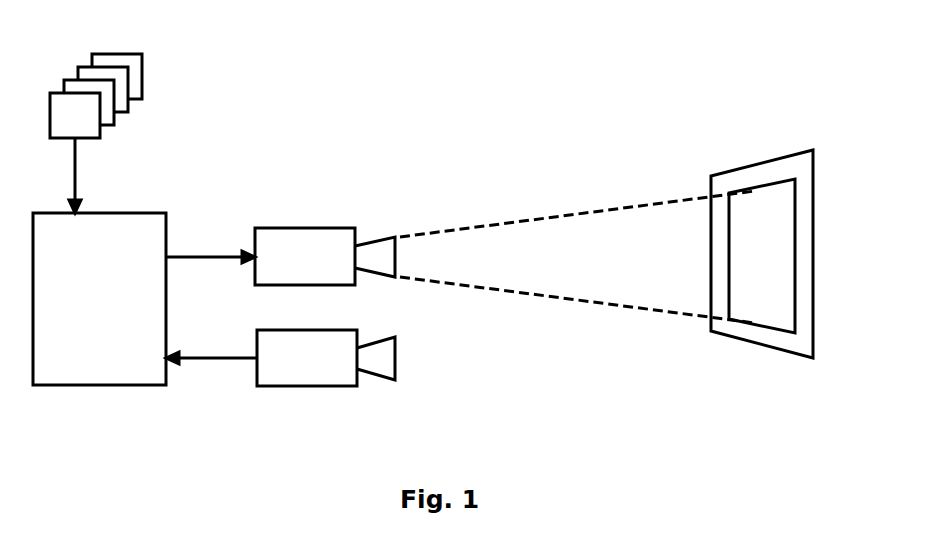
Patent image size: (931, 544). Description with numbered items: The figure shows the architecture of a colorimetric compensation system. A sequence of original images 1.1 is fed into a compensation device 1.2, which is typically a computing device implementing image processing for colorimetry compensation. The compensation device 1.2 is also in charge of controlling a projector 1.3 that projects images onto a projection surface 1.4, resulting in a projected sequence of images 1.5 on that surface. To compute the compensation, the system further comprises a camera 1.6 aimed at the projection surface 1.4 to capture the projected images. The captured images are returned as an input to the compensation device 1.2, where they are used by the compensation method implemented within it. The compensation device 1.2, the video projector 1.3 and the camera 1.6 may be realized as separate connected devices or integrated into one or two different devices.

The sequence of original images 1.1 is at (143, 78).
The compensation device 1.2 is at (100, 385).
The projector 1.3 is at (305, 228).
The projection surface 1.4 is at (762, 160).
The projected sequence of images 1.5 is at (762, 325).
The camera 1.6 is at (307, 386).